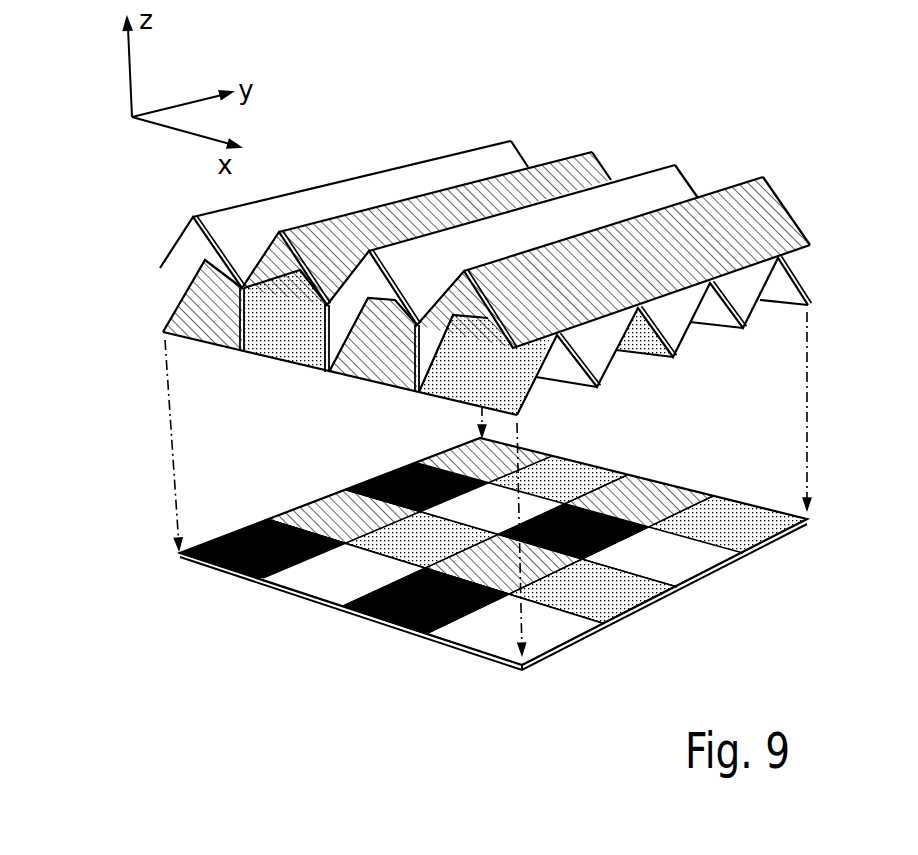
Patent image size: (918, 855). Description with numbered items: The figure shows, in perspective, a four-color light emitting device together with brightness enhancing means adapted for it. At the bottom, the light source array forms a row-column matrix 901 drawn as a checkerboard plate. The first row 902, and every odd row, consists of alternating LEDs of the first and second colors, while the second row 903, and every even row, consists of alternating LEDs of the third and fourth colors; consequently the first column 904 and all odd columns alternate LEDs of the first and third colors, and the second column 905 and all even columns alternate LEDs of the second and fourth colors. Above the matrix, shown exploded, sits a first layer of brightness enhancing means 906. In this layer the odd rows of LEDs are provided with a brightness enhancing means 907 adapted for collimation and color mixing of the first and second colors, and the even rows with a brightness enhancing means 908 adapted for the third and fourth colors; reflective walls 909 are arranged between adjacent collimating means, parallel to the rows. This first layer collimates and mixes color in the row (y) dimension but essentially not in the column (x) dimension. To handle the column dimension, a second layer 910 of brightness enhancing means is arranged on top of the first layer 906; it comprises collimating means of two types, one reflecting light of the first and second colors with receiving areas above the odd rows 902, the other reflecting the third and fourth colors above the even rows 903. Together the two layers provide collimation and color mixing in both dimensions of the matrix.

The row-column matrix 901 is at (762, 470).
The first row 902 is at (503, 678).
The second row 903 is at (417, 647).
The first column 904 is at (538, 668).
The second column 905 is at (615, 632).
The first layer of brightness enhancing means 906 is at (160, 332).
The brightness enhancing means 907 is at (447, 393).
The brightness enhancing means 908 is at (382, 378).
The reflective walls 909 is at (402, 350).
The second layer of brightness enhancing means 910 is at (190, 213).